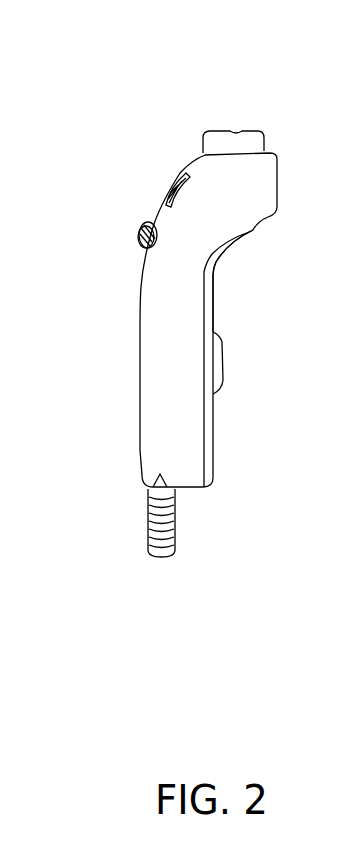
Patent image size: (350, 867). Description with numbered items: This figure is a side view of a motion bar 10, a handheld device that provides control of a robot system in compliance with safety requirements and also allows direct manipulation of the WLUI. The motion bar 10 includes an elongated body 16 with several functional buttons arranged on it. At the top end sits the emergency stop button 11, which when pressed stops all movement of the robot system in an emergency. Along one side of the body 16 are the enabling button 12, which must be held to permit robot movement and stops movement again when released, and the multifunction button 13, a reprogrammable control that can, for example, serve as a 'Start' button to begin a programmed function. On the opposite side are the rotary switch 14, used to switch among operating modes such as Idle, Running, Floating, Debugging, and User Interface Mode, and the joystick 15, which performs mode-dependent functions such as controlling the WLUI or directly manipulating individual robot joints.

The motion bar 10 is at (126, 70).
The emergency stop button 11 is at (203, 140).
The enabling button 12 is at (220, 373).
The multifunction button 13 is at (214, 296).
The rotary switch 14 is at (168, 193).
The joystick 15 is at (142, 235).
The body 16 is at (150, 408).